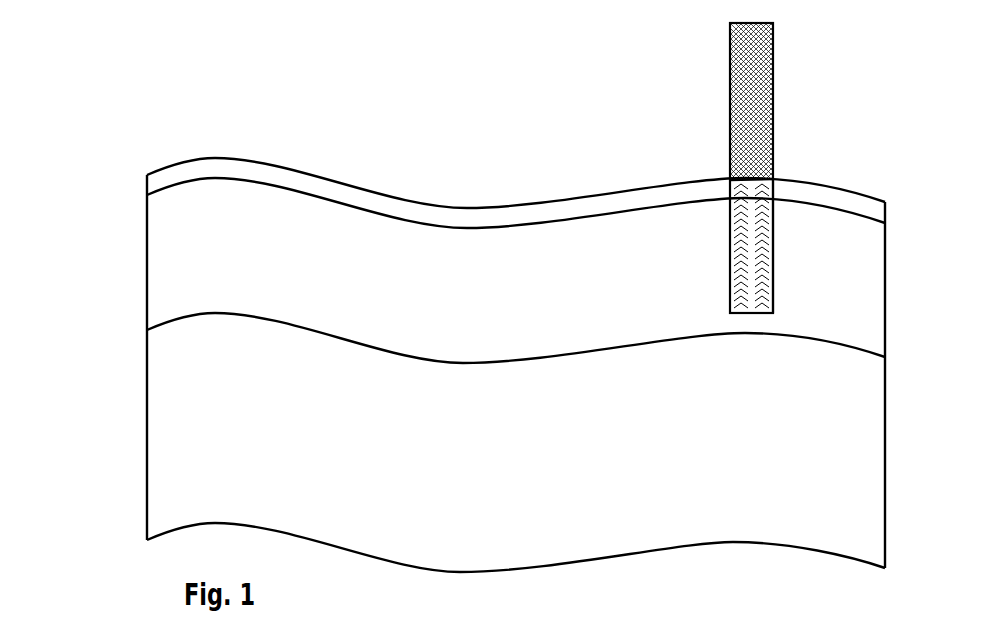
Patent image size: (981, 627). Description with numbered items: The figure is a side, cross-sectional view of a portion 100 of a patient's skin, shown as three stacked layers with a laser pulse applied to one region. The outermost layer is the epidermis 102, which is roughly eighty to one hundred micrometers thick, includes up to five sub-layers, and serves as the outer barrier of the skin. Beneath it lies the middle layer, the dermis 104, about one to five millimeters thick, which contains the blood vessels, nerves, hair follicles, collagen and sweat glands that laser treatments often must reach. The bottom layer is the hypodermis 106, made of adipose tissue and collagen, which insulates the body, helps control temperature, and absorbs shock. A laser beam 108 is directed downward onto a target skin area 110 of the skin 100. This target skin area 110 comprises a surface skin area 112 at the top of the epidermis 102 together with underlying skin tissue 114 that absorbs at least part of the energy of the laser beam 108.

The portion of the skin 100 is at (162, 133).
The epidermis 102 is at (163, 178).
The dermis 104 is at (162, 252).
The hypodermis 106 is at (162, 412).
The laser beam 108 is at (775, 49).
The target skin area 110 is at (728, 258).
The surface skin area 112 is at (748, 178).
The underlying skin tissue 114 is at (773, 283).